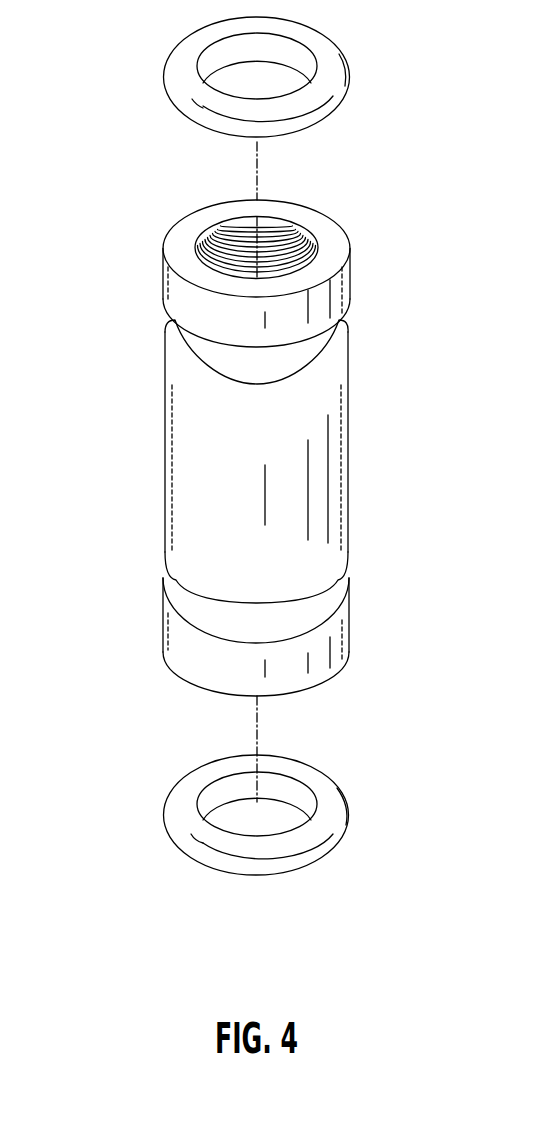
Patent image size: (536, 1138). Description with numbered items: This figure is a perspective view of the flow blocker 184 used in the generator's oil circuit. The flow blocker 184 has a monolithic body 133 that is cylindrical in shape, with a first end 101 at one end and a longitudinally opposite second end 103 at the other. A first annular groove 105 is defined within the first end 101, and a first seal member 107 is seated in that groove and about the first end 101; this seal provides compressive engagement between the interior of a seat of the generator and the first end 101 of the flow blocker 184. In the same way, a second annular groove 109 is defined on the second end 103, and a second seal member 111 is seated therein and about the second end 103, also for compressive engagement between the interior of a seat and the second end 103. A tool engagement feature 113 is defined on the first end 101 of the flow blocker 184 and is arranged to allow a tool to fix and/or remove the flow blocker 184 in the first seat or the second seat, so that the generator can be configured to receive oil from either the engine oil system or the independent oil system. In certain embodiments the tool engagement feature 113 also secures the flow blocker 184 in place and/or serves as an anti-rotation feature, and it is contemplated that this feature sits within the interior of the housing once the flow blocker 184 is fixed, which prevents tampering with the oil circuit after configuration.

The first end 101 is at (292, 248).
The second end 103 is at (292, 619).
The first annular groove 105 is at (220, 373).
The first seal member 107 is at (225, 85).
The second annular groove 109 is at (209, 576).
The second seal member 111 is at (292, 815).
The tool engagement feature 113 is at (269, 214).
The monolithic body 133 is at (247, 469).
The flow blocker 184 is at (233, 473).